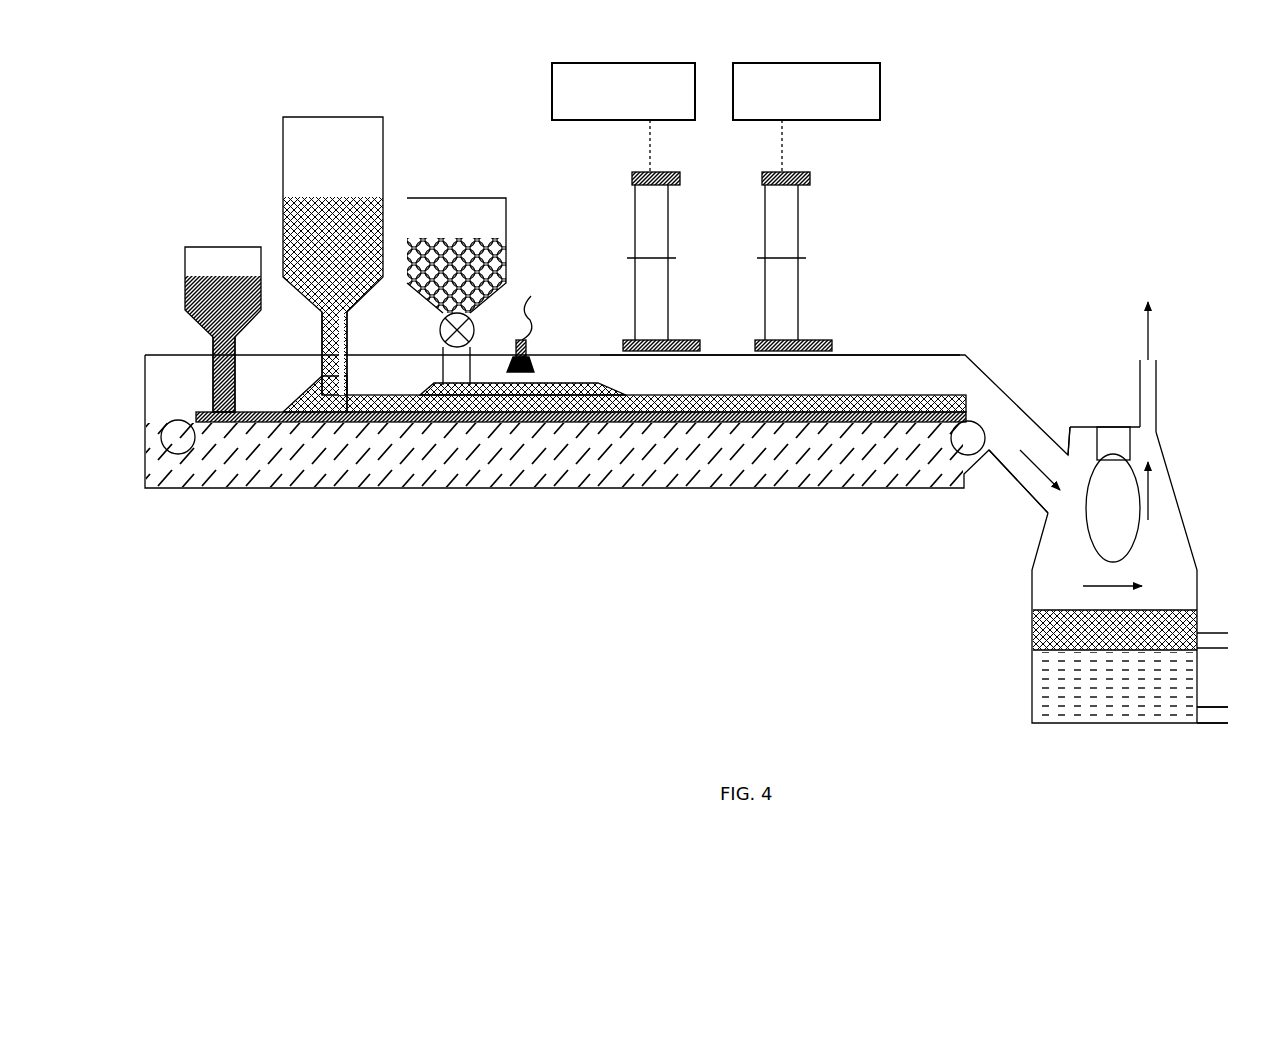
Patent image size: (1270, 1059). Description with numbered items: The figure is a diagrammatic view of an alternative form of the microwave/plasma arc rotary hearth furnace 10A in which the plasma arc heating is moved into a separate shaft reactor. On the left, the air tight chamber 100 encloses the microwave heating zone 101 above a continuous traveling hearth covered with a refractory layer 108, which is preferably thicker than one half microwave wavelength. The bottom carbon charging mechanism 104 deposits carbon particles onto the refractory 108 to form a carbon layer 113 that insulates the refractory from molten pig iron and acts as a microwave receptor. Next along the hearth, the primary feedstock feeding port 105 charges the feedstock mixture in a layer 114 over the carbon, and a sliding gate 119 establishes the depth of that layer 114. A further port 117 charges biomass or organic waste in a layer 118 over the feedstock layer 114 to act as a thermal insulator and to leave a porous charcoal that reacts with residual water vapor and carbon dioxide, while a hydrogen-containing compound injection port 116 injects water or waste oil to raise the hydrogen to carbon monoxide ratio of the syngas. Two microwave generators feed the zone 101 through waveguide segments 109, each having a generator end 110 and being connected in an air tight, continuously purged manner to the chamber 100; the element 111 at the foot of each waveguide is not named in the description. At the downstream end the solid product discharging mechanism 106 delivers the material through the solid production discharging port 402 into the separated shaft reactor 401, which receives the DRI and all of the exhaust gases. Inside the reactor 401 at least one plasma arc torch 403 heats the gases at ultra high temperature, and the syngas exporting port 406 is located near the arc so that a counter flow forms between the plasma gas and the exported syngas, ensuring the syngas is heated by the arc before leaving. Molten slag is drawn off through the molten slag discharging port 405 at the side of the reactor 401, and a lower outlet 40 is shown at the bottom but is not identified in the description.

The chamber 100 is at (160, 386).
The microwave/plasma arc rotary hearth furnace 10A is at (138, 510).
The bottom carbon charging mechanism 104 is at (226, 258).
The primary feedstock feeding port 105 is at (362, 130).
The carbon layer 113 is at (277, 410).
The sliding gate 119 is at (355, 382).
The port for charging biomass or organic waste 117 is at (470, 212).
The hydrogen-containing compound injection port 116 is at (530, 316).
The biomass or organic waste layer 118 is at (555, 393).
The generator end 110 is at (640, 172).
The waveguide segments 109 is at (645, 310).
The waveguide base 111 is at (825, 342).
The microwave heating zone 101 is at (710, 368).
The feedstock mixture layer 114 is at (745, 401).
The refractory layer 108 is at (625, 455).
The solid product discharging mechanism 106 is at (1000, 425).
The solid production discharging port 402 is at (1020, 472).
The shaft reactor 401 is at (1165, 540).
The plasma arc torch 403 is at (1108, 467).
The syngas exporting port 406 is at (1150, 402).
The molten slag discharging port 405 is at (1215, 643).
The outlet 40 is at (1210, 715).